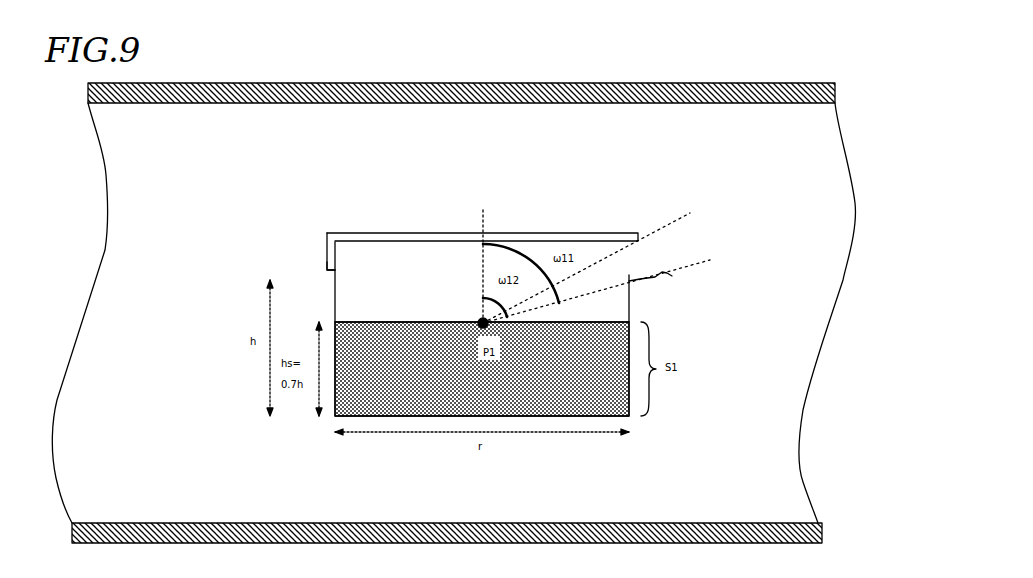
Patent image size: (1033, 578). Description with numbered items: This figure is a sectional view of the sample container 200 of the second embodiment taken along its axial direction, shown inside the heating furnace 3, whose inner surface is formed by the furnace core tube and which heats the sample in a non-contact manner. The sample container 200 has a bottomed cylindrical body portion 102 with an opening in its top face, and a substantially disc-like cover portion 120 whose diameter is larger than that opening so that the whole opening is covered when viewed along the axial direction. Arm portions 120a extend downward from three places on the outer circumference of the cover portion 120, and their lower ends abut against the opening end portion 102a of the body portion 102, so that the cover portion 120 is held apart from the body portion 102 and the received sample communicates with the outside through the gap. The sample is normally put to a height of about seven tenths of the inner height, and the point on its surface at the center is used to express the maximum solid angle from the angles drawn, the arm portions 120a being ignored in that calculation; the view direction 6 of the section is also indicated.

The heating furnace 3 is at (220, 103).
The sample container 200 is at (752, 164).
The body portion 102 is at (725, 357).
The opening edge of housing 102a is at (670, 274).
The cover portion 120 is at (366, 233).
The arm portions 120a is at (327, 270).
The airflow direction 6 is at (640, 253).